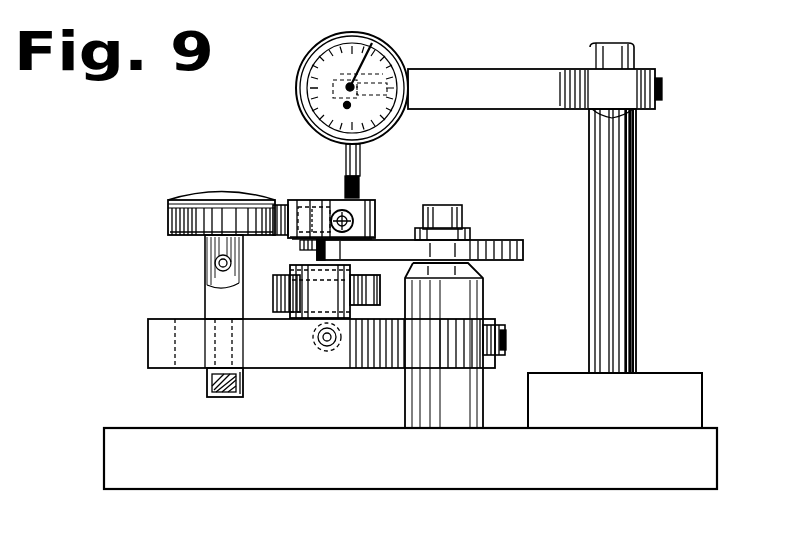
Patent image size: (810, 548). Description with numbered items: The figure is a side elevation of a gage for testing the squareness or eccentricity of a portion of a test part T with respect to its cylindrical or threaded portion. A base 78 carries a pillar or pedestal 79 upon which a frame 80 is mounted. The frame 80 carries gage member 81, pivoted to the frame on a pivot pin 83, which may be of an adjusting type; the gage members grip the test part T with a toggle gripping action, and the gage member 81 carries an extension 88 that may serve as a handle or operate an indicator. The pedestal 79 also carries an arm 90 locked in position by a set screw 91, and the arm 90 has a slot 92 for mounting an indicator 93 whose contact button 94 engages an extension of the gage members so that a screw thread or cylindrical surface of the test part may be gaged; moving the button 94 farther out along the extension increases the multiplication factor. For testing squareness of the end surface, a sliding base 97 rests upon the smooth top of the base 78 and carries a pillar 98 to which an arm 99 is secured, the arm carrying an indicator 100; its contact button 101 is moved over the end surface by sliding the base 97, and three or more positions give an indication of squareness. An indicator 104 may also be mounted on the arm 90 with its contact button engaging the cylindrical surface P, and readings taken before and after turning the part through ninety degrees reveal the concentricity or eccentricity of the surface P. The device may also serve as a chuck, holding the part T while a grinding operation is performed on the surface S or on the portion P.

The base 78 is at (540, 489).
The pillar or pedestal 79 is at (404, 408).
The frame 80 is at (524, 250).
The gage member 81 is at (376, 212).
The pivot pin 83 is at (318, 200).
The extension 88 is at (354, 221).
The arm 90 is at (352, 368).
The set screw 91 is at (506, 347).
The slot 92 is at (176, 352).
The indicator 93 is at (234, 198).
The contact button 94 is at (312, 207).
The sliding base 97 is at (697, 393).
The pillar 98 is at (623, 257).
The arm 99 is at (503, 69).
The indicator 100 is at (373, 56).
The contact button 101 is at (360, 187).
The indicator 104 is at (380, 292).
The surface S is at (309, 198).
The test part T is at (300, 247).
The cylindrical surface P is at (300, 292).